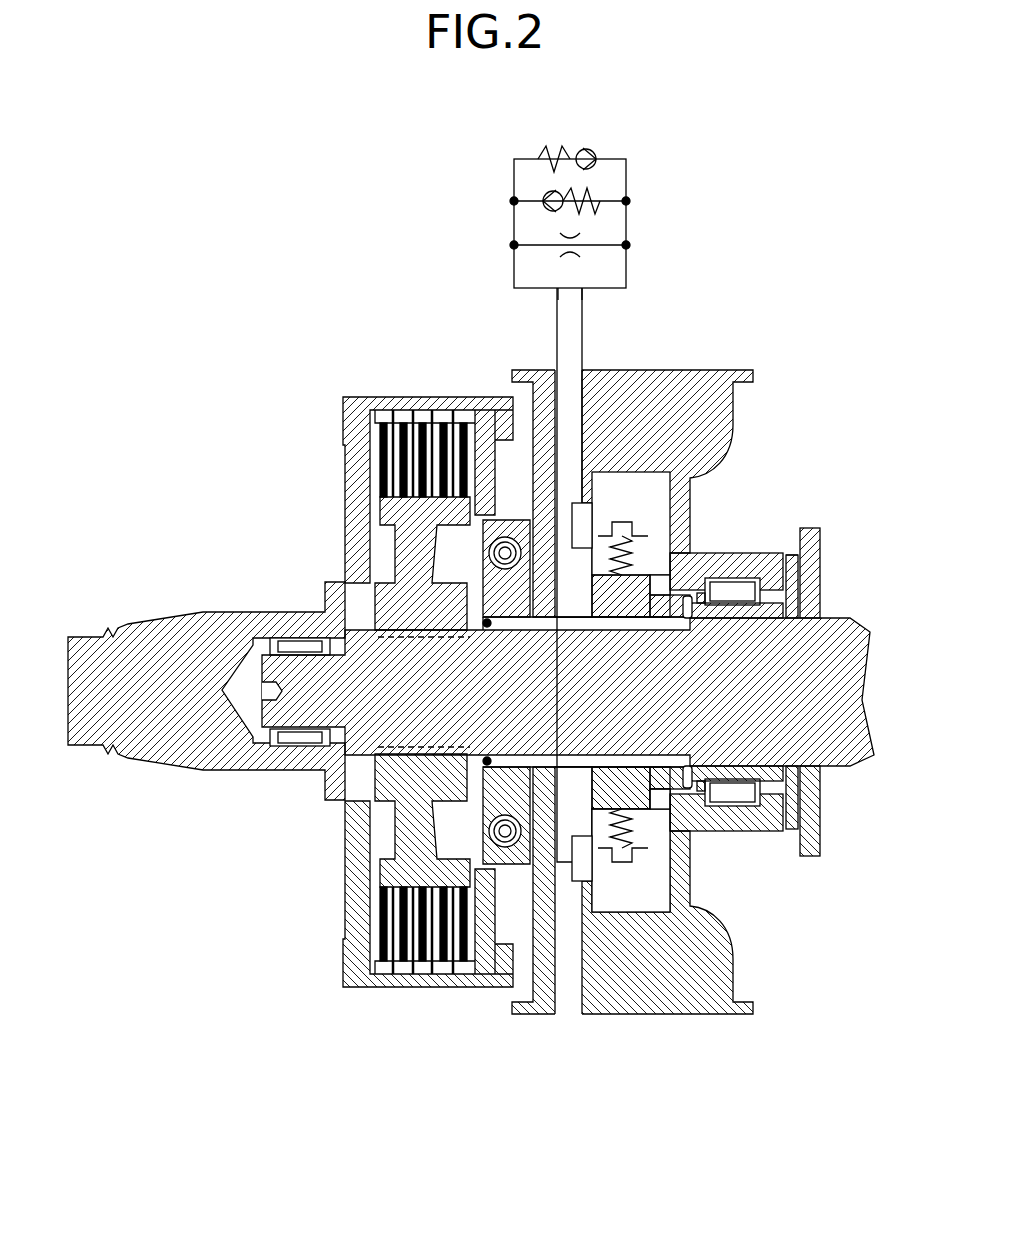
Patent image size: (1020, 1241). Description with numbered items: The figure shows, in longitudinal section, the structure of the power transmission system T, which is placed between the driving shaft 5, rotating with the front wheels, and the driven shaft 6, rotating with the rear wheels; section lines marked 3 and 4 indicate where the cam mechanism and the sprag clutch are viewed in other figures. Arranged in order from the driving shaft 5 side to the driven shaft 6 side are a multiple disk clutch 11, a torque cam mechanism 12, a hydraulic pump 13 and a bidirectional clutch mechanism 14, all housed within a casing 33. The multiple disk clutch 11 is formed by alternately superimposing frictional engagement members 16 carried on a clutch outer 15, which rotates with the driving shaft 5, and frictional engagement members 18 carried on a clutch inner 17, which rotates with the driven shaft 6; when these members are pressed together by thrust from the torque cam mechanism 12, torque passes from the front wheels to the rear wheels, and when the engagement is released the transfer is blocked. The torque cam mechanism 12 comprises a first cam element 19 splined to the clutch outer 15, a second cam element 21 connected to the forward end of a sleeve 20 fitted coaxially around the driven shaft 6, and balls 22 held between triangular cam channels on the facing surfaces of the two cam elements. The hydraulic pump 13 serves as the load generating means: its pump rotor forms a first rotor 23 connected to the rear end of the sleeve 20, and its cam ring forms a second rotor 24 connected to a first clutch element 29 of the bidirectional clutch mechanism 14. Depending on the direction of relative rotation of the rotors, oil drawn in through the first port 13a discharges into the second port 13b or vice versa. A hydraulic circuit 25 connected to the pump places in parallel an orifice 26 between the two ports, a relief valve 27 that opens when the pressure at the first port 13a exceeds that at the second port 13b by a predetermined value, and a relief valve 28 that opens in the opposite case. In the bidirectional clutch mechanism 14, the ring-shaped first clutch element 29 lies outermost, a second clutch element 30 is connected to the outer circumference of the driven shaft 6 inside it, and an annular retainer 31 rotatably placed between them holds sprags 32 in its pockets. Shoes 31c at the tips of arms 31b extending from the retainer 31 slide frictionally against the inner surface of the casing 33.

The driving shaft 5 is at (138, 704).
The driven shaft 6 is at (712, 717).
The multiple disk clutch 11 is at (416, 1002).
The torque cam mechanism 12 is at (524, 884).
The hydraulic pump 13 is at (688, 483).
The first port 13a is at (600, 545).
The second port 13b is at (612, 862).
The bidirectional clutch mechanism 14 is at (777, 552).
The clutch outer 15 is at (350, 545).
The frictional engagement members 16 is at (425, 420).
The clutch inner 17 is at (412, 752).
The frictional engagement members 18 is at (405, 527).
The first cam element 19 is at (490, 628).
The sleeve 20 is at (580, 628).
The second cam element 21 is at (520, 626).
The balls 22 is at (505, 545).
The first rotor 23 is at (632, 620).
The second rotor 24 is at (612, 485).
The hydraulic circuit 25 is at (634, 226).
The orifice 26 is at (572, 256).
The relief valve 27 is at (580, 150).
The relief valve 28 is at (545, 197).
The first clutch element 29 is at (708, 557).
The second clutch element 30 is at (712, 620).
The retainer 31 is at (778, 622).
The arms 31b is at (798, 592).
The shoes 31c is at (798, 570).
The sprags 32 is at (735, 604).
The casing 33 is at (814, 530).
The power transmission system T is at (350, 370).
The section line 3 is at (543, 578).
The section line 4 is at (760, 870).